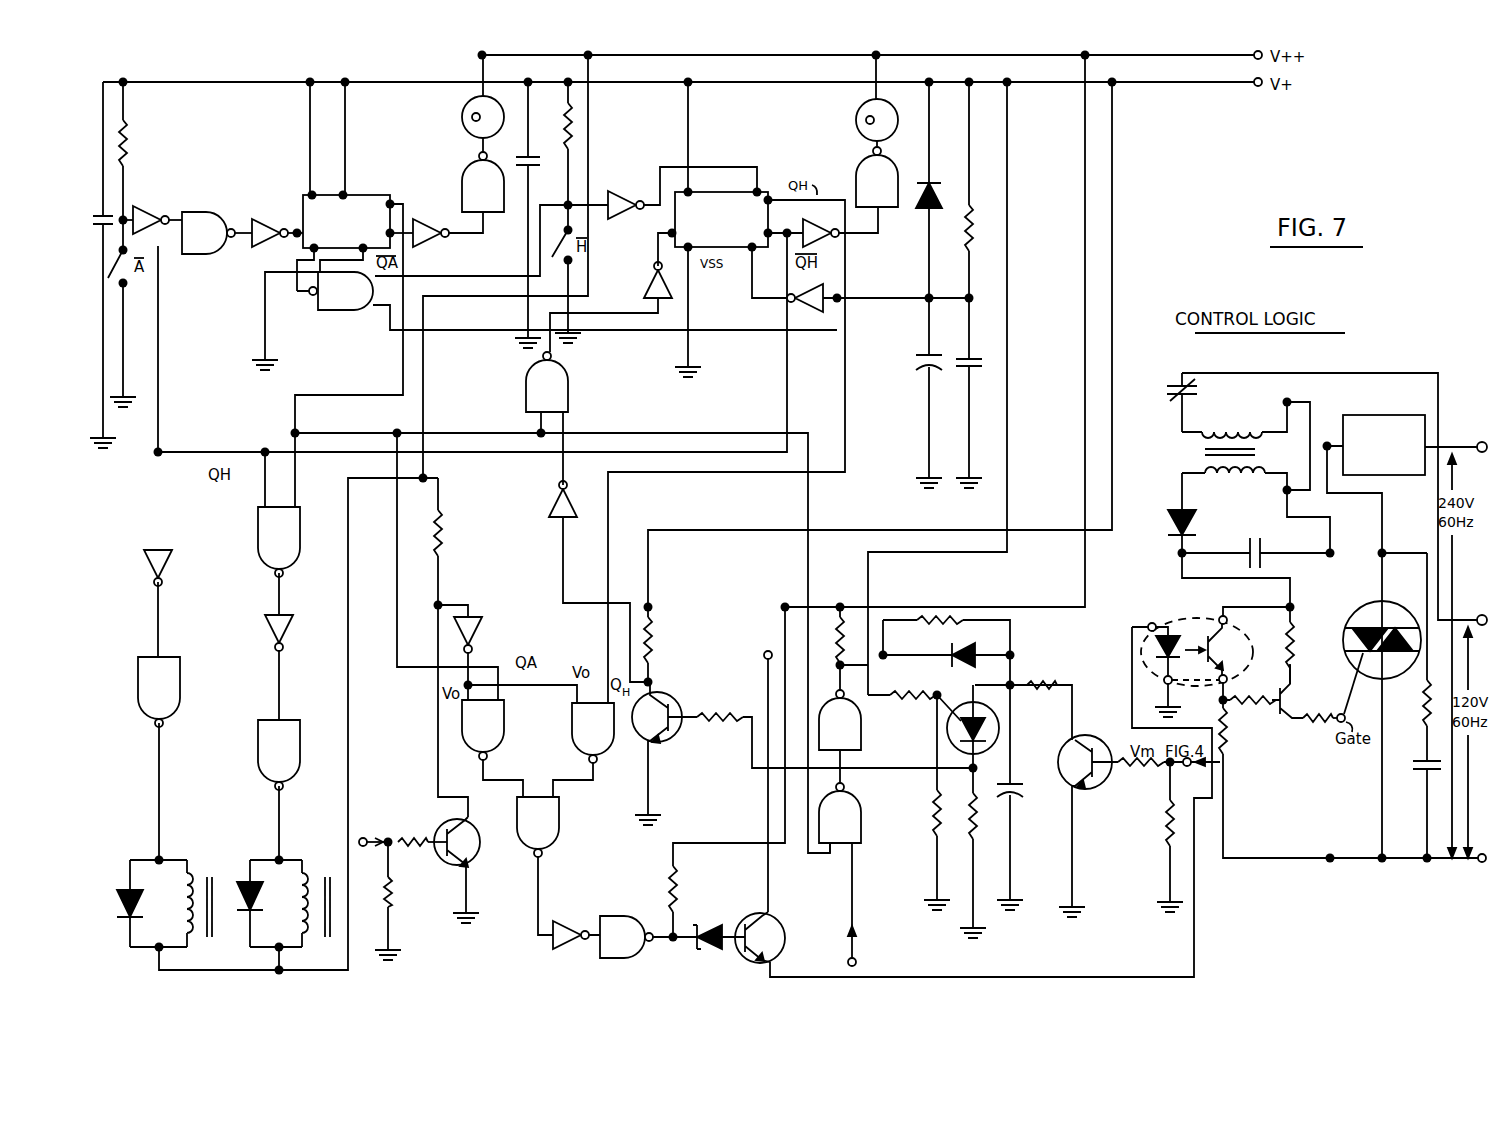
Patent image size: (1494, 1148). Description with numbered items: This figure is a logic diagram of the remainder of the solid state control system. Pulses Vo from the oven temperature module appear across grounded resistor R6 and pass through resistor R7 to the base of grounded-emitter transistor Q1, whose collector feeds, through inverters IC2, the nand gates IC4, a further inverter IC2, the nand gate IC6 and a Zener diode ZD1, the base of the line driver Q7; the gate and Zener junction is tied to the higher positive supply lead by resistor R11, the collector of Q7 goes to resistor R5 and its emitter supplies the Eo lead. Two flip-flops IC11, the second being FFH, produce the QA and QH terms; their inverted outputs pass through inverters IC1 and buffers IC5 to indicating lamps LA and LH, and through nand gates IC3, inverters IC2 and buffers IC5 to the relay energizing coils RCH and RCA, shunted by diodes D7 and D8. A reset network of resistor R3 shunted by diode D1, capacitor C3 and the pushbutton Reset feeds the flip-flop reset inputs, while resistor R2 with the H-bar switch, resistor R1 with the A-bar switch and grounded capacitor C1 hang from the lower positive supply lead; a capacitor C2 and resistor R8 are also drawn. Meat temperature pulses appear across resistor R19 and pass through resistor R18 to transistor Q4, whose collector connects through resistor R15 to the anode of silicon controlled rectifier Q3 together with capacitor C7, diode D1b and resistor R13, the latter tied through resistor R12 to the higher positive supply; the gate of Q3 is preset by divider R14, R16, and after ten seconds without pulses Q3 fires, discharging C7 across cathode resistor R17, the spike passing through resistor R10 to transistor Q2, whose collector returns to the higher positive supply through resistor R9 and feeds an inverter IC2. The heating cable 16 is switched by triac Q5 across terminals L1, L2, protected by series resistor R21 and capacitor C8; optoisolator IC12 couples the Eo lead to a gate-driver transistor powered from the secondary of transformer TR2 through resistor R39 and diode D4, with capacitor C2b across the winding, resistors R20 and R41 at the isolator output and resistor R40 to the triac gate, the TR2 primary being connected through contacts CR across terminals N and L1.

The resistor R1 is at (127, 144).
The capacitor C1 is at (97, 209).
The inverter IC1 is at (617, 193).
The nand gate IC3 is at (375, 394).
The buffer IC5 is at (230, 768).
The indicating lamp LA is at (462, 117).
The indicating lamp LH is at (860, 120).
The resistor R2 is at (586, 126).
The capacitor C2 is at (535, 210).
The diode D1 is at (934, 212).
The resistor R3 is at (978, 240).
The capacitor C3 is at (917, 388).
The reset pushbutton switch Reset is at (992, 359).
The inverter IC2 is at (589, 922).
The nand gate IC4 is at (661, 778).
The nand gate and buffer IC6 is at (730, 824).
The flip-flop IC11 is at (380, 190).
The second flip-flop FFH is at (721, 219).
The resistor R5 is at (760, 655).
The resistor R6 is at (402, 896).
The resistor R7 is at (422, 856).
The resistor R8 is at (443, 549).
The resistor R9 is at (652, 644).
The resistor R10 is at (701, 714).
The resistor R11 is at (676, 888).
The resistor R12 is at (828, 636).
The resistor R13 is at (920, 617).
The resistor R14 is at (930, 684).
The resistor R15 is at (1035, 676).
The resistor R16 is at (930, 828).
The cathode resistor R17 is at (997, 818).
The resistor R18 is at (1169, 779).
The resistor R19 is at (1168, 824).
The resistor R20 is at (1230, 720).
The resistor R21 is at (1426, 728).
The resistor R39 is at (1292, 646).
The resistor R40 is at (1316, 724).
The resistor R41 is at (1237, 688).
The capacitor C7 is at (1036, 782).
The capacitor C8 is at (1416, 768).
The transistor Q1 is at (472, 855).
The transistor Q2 is at (658, 743).
The silicon controlled rectifier Q3 is at (945, 721).
The transistor Q4 is at (1110, 716).
The triac Q5 is at (1384, 668).
The line driver transistor Q7 is at (768, 924).
The Zener diode ZD1 is at (700, 960).
The diode D4 is at (1168, 507).
The diode D7 is at (114, 894).
The diode D8 is at (260, 895).
The relay energizing coil RCH is at (210, 912).
The relay energizing coil RCA is at (319, 913).
The relay contacts CR is at (1155, 395).
The transformer TR2 is at (1195, 454).
The optoisolator IC12 is at (1186, 632).
The oven heating cable 16 is at (1405, 477).
The line terminal L1 is at (1480, 863).
The line terminal L2 is at (1478, 442).
The neutral terminal N is at (1482, 615).
The oven temperature pulses Vo is at (390, 830).
The output lead Eo is at (938, 976).
The diode D1b is at (1000, 640).
The capacitor C2b is at (1251, 546).